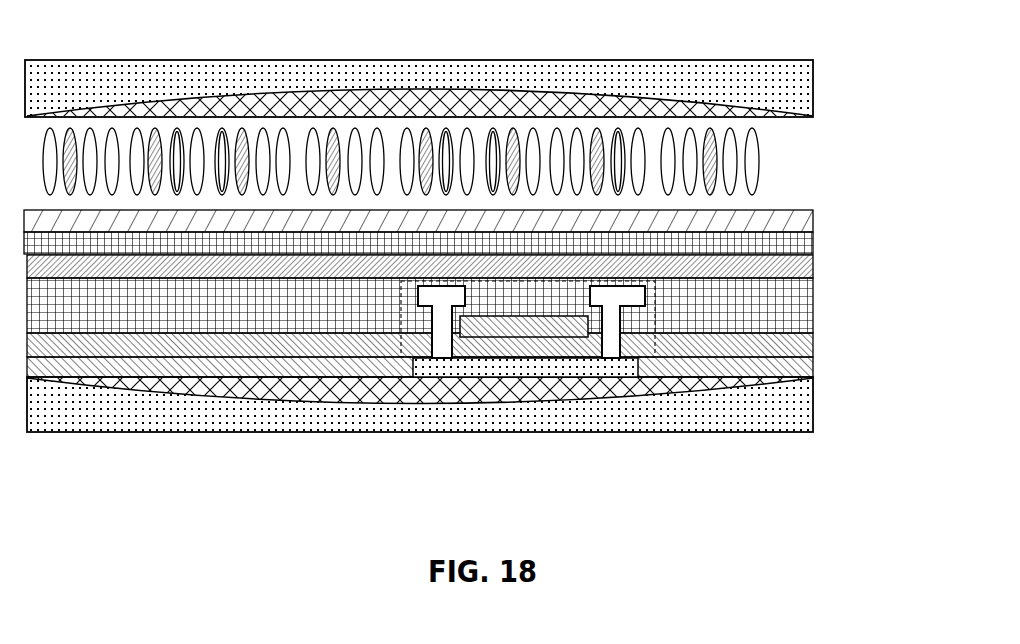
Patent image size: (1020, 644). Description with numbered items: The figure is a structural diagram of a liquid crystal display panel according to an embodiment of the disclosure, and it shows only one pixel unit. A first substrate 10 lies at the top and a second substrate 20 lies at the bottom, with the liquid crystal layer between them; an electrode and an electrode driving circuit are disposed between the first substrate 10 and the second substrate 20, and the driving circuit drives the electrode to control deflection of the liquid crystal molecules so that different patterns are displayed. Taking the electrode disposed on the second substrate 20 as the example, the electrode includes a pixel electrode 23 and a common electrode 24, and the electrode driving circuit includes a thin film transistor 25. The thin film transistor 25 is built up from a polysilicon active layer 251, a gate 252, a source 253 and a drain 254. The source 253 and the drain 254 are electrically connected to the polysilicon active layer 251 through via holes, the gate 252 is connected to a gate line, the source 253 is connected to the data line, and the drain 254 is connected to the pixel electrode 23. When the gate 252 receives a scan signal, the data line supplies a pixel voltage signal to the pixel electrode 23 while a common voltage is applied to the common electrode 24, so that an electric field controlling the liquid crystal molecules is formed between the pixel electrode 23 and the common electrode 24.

The first substrate 10 is at (813, 84).
The second substrate 20 is at (813, 408).
The pixel electrode 23 is at (813, 264).
The common electrode 24 is at (813, 217).
The thin film transistor 25 is at (432, 373).
The polysilicon active layer 251 is at (487, 365).
The gate 252 is at (546, 336).
The source 253 is at (437, 321).
The drain 254 is at (612, 333).